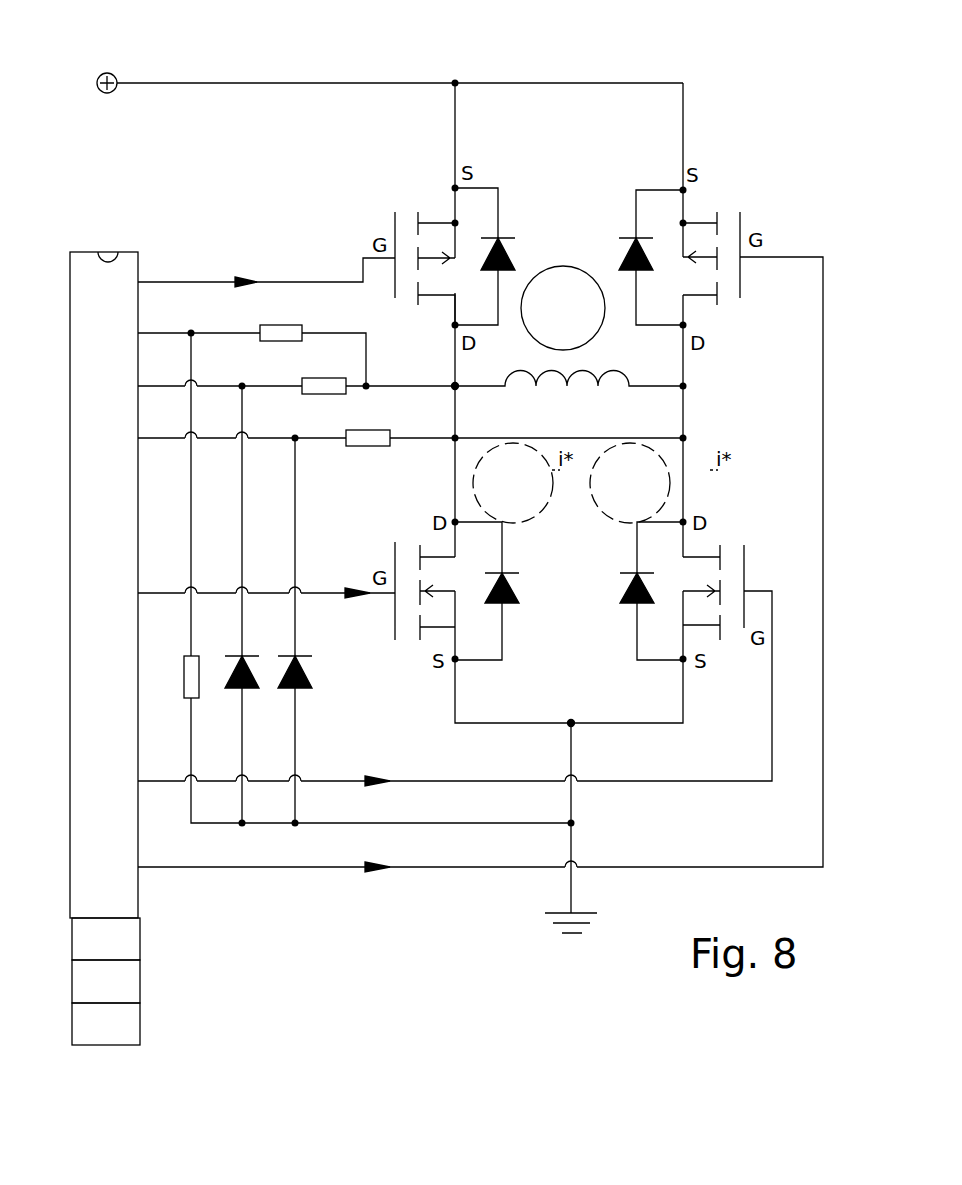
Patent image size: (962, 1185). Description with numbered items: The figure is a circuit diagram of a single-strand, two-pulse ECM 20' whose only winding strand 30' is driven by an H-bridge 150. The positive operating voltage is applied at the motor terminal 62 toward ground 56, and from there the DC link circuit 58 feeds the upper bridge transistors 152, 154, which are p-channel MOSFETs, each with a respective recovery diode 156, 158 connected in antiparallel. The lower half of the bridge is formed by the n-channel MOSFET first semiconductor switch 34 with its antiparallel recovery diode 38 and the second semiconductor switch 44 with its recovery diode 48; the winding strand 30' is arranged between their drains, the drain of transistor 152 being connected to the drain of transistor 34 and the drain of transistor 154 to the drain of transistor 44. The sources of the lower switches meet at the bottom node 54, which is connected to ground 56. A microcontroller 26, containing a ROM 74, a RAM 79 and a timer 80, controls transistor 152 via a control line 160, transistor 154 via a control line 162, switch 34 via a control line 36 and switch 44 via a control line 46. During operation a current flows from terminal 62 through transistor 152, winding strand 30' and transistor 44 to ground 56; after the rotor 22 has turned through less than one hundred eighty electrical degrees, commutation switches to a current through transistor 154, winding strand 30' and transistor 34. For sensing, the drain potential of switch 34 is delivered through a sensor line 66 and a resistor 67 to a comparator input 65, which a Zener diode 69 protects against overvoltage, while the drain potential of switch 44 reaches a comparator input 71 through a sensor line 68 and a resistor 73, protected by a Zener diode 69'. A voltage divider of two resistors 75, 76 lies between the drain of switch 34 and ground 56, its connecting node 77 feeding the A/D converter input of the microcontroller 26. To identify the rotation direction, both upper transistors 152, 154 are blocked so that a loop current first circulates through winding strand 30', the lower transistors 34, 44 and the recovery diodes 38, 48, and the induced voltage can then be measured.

The single-strand, two-pulse ECM 20' is at (655, 18).
The motor terminal 62 is at (112, 73).
The DC link circuit 58 is at (335, 83).
The H-bridge 150 is at (590, 150).
The upper bridge transistor 152 is at (395, 225).
The upper bridge transistor 154 is at (745, 237).
The recovery diode 156 is at (515, 258).
The recovery diode 158 is at (622, 260).
The control line 160 is at (320, 282).
The resistor 75 is at (277, 325).
The connecting node 77 is at (195, 340).
The sensor line 66 is at (400, 386).
The bottom node 54 is at (455, 386).
The comparator input 65 is at (70, 386).
The comparator input 71 is at (70, 438).
The resistor 67 is at (320, 394).
The sensor line 68 is at (430, 438).
The resistor 73 is at (366, 446).
The rotor 22 is at (590, 301).
The winding strand 30' is at (569, 397).
The first semiconductor switch 34 is at (395, 551).
The control line 36 is at (320, 593).
The recovery diode 38 is at (515, 595).
The recovery diode 48 is at (622, 596).
The second controllable semiconductor switch 44 is at (748, 553).
The microcontroller 26 is at (126, 688).
The resistor 76 is at (200, 677).
The Zener diode 69 is at (254, 604).
The Zener diode 69' is at (310, 630).
The control line 46 is at (410, 781).
The ROM 74 is at (140, 936).
The RAM 79 is at (140, 978).
The timer 80 is at (140, 1021).
The control line 162 is at (253, 867).
The ground 56 is at (560, 913).